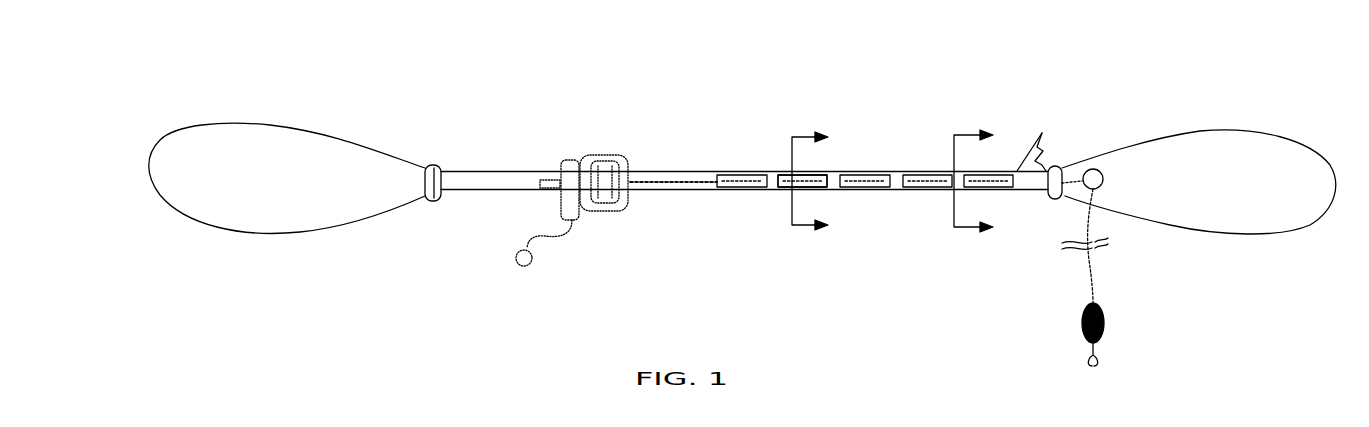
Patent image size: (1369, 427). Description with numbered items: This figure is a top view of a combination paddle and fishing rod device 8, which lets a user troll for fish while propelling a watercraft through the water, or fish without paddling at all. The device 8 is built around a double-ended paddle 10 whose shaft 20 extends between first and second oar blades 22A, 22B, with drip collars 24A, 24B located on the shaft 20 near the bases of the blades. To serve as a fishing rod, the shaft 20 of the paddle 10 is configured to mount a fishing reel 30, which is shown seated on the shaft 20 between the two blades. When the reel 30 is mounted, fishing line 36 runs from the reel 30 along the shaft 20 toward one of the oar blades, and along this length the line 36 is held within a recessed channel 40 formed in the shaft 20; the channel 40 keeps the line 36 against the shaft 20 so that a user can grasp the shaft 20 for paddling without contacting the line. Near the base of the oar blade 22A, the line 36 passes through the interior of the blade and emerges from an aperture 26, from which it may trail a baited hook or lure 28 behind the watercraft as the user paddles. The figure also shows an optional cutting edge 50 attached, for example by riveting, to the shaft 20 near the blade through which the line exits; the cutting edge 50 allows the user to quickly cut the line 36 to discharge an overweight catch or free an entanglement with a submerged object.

The combination paddle and fishing rod device 8 is at (740, 80).
The double-ended paddle 10 is at (468, 200).
The shaft 20 is at (666, 190).
The first oar blade 22A is at (1183, 144).
The second oar blade 22B is at (320, 150).
The drip collar 24A is at (1060, 165).
The drip collar 24B is at (433, 163).
The aperture 26 is at (1100, 189).
The lure 28 is at (1108, 312).
The fishing reel 30 is at (600, 155).
The fishing line 36 is at (692, 183).
The recessed channel 40 is at (822, 187).
The cutting edge 50 is at (1017, 170).